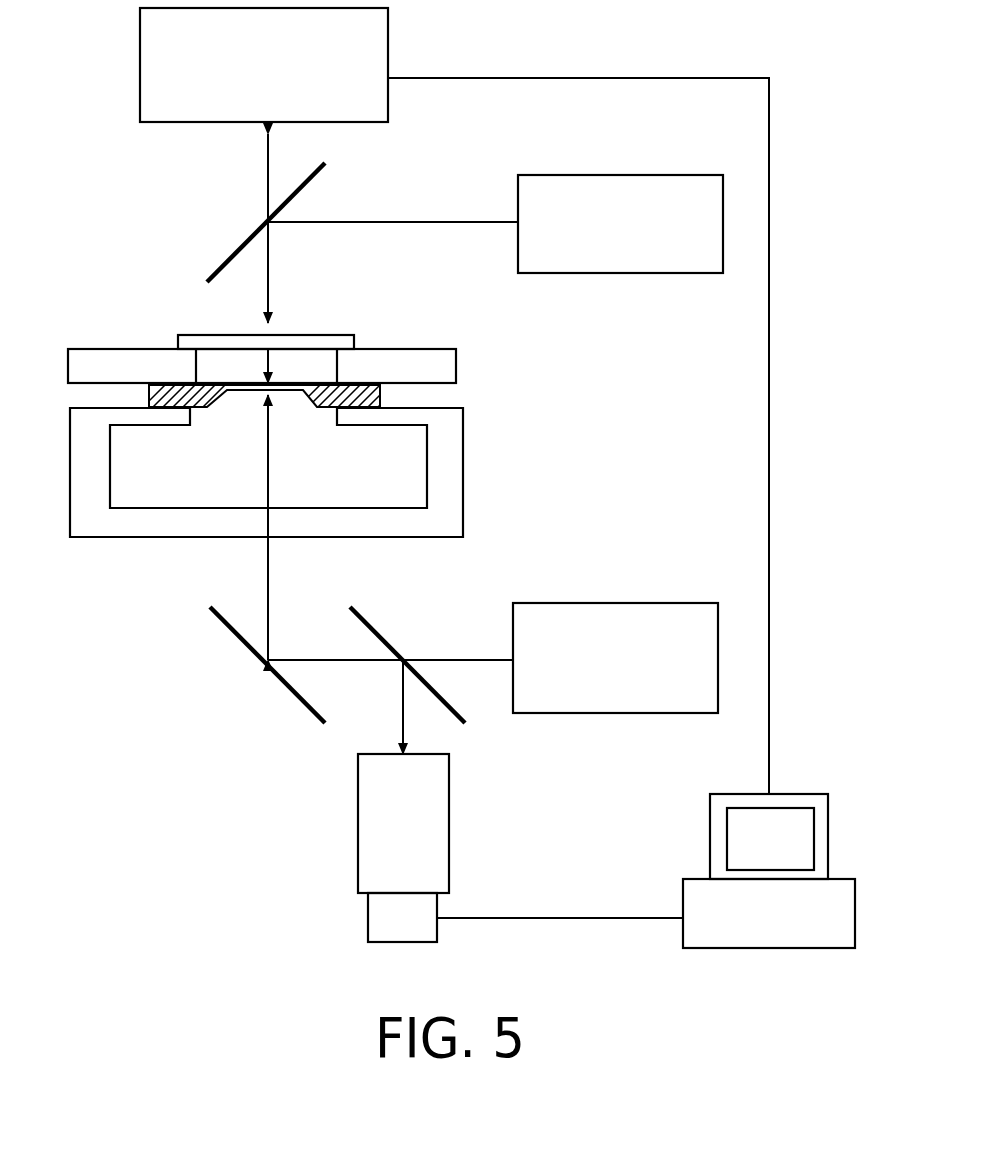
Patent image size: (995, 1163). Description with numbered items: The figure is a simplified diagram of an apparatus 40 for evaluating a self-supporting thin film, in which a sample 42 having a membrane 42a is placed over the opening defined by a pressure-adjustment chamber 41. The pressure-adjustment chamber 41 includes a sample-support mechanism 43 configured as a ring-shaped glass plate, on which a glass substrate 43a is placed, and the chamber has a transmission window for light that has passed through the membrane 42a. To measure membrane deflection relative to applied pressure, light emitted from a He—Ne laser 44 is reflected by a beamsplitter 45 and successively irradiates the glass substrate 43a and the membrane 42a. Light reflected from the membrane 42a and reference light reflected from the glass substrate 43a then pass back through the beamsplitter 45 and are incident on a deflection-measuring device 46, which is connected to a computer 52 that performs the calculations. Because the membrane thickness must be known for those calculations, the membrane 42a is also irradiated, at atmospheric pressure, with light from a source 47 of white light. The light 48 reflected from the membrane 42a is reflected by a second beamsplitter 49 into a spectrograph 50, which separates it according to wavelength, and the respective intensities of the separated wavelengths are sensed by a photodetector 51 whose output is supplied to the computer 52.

The apparatus 40 is at (805, 97).
The pressure-adjustment chamber 41 is at (465, 482).
The sample 42 is at (332, 408).
The membrane 42a is at (255, 392).
The sample-support mechanism 43 is at (445, 366).
The glass substrate 43a is at (340, 333).
The He—Ne laser 44 is at (618, 253).
The beamsplitter 45 is at (240, 250).
The deflection-measuring device 46 is at (140, 75).
The source of white light 47 is at (613, 713).
The light reflected from the membrane 48 is at (403, 707).
The beamsplitter 49 is at (380, 633).
The spectrograph 50 is at (430, 825).
The photodetector 51 is at (368, 917).
The computer 52 is at (753, 932).